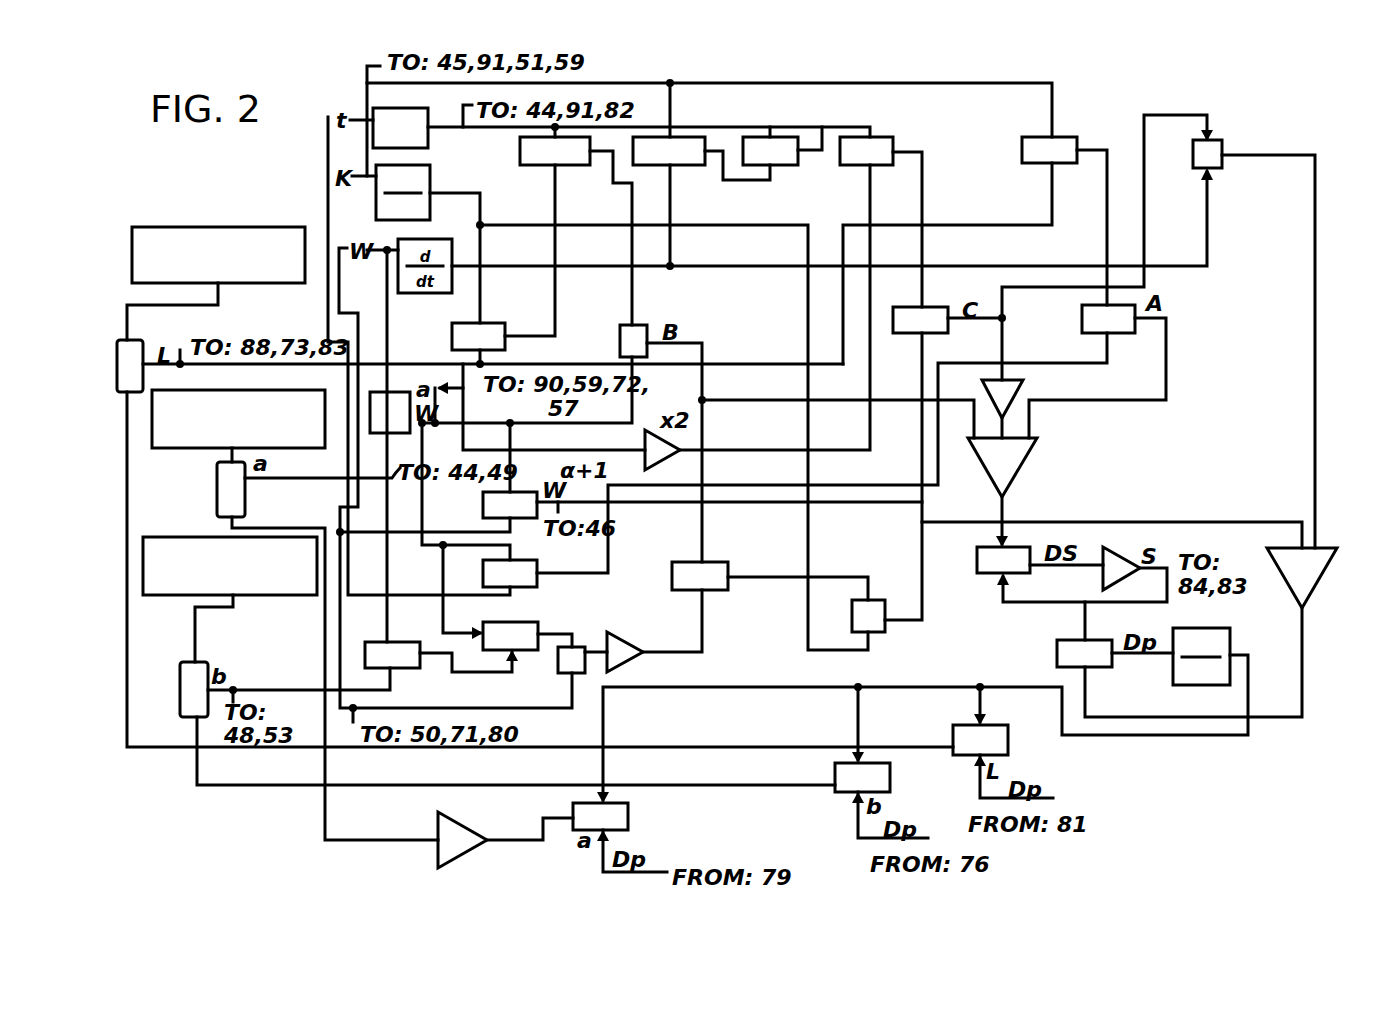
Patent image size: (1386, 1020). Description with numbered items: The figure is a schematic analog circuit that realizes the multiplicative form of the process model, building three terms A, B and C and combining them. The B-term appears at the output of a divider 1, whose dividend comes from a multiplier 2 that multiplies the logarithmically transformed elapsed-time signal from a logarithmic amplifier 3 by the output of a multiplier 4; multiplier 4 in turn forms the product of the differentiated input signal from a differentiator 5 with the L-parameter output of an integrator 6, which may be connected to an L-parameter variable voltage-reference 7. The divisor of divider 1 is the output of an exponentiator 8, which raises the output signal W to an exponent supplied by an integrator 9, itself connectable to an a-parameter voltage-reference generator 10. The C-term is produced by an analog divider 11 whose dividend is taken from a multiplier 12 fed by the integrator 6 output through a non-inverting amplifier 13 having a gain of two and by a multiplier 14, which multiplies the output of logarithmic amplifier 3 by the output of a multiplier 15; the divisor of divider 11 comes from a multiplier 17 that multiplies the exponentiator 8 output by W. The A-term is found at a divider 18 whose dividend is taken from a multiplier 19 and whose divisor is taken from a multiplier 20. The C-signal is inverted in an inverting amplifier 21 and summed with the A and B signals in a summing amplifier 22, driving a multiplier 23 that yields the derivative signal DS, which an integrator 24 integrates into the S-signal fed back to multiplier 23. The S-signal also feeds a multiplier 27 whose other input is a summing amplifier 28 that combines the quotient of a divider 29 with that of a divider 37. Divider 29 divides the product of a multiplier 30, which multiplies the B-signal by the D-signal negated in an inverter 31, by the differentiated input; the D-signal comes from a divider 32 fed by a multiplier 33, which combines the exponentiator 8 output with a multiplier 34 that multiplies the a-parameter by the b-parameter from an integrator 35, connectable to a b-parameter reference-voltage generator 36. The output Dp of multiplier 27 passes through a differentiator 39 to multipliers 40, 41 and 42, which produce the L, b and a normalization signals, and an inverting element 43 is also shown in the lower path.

The divider 1 is at (645, 326).
The multiplier 2 is at (548, 166).
The logarithmic amplifier 3 is at (428, 143).
The multiplier 4 is at (494, 324).
The differentiator 5 is at (430, 170).
The integrator 6 is at (143, 346).
The L-parameter variable voltage-reference 7 is at (132, 251).
The exponentiator 8 is at (381, 434).
The integrator 9 is at (217, 480).
The a-parameter voltage-reference generator 10 is at (170, 450).
The analog divider 11 is at (932, 307).
The multiplier 12 is at (880, 165).
The non-inverting amplifier 13 is at (662, 452).
The multiplier 14 is at (778, 165).
The multiplier 15 is at (685, 165).
The multiplier 17 is at (483, 505).
The divider 18 is at (1082, 320).
The multiplier 19 is at (1042, 163).
The multiplier 20 is at (483, 573).
The inverting amplifier 21 is at (1018, 393).
The summing amplifier 22 is at (1025, 470).
The multiplier 23 is at (977, 553).
The integrator 24 is at (1103, 578).
The multiplier 27 is at (1057, 645).
The summing amplifier 28 is at (1286, 594).
The divider 29 is at (886, 597).
The multiplier 30 is at (735, 554).
The inverter 31 is at (640, 638).
The divider 32 is at (558, 673).
The multiplier 33 is at (540, 628).
The multiplier 34 is at (408, 642).
The integrator 35 is at (180, 683).
The b-parameter reference-voltage generator 36 is at (300, 595).
The divider 37 is at (1222, 148).
The differentiator 39 is at (1173, 680).
The multiplier 40 is at (1008, 732).
The multiplier 41 is at (890, 778).
The multiplier 42 is at (628, 817).
The inverting amplifier 43 is at (445, 850).